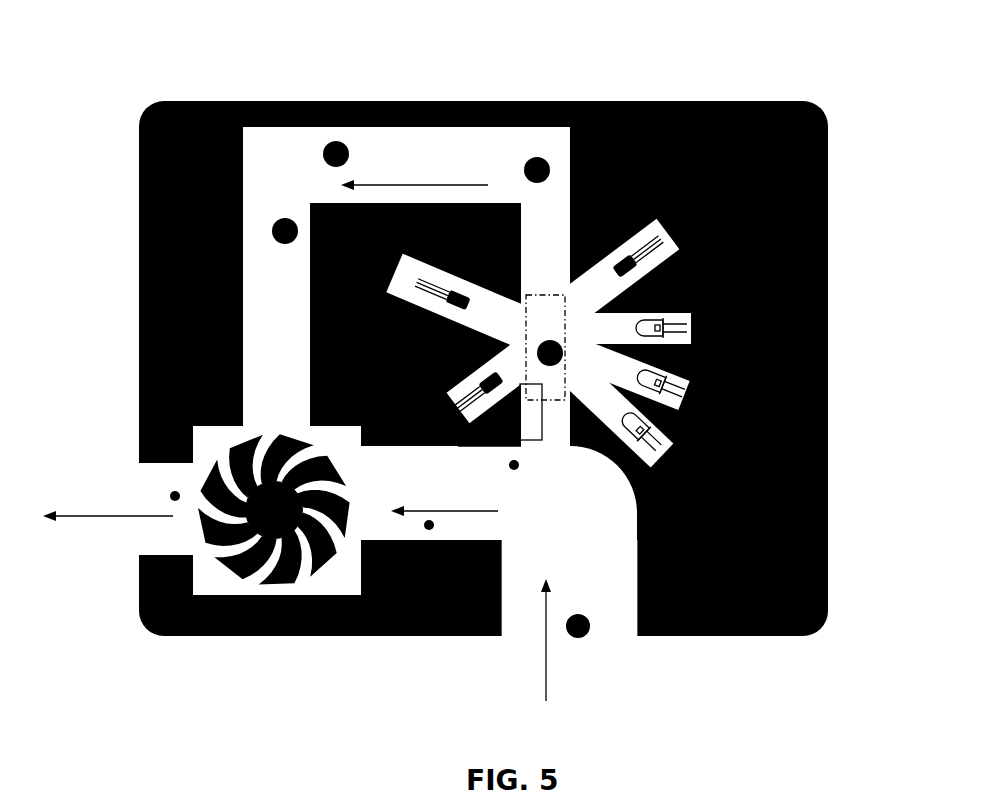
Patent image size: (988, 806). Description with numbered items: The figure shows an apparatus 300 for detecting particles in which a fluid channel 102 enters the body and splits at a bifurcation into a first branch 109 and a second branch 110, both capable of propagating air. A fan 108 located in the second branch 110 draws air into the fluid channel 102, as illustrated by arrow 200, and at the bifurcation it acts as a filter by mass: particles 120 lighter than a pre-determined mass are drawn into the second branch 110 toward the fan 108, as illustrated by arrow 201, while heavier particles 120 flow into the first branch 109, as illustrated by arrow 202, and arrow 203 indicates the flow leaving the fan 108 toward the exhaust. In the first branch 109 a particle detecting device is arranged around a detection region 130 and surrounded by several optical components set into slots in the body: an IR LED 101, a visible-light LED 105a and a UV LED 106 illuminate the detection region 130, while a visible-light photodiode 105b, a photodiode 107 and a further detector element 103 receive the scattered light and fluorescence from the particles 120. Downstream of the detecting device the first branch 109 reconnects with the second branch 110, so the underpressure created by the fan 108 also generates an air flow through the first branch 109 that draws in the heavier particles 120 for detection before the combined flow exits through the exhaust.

The apparatus 300 is at (157, 55).
The detection region 130 is at (524, 285).
The first branch 109 is at (533, 445).
The second branch 110 is at (488, 488).
The fluid channel 102 is at (522, 618).
The particles 120 is at (582, 622).
The fan 108 is at (250, 428).
The gas sensor 103 is at (463, 297).
The photodiode 107 is at (612, 266).
The visible-light photodiode 105b is at (505, 362).
The visible-light LED 105a is at (627, 317).
The UV LED 106 is at (628, 366).
The IR LED 101 is at (617, 410).
The arrow 202 is at (387, 177).
The arrow 201 is at (418, 502).
The air outlet flow 203 is at (82, 508).
The arrow 200 is at (538, 664).